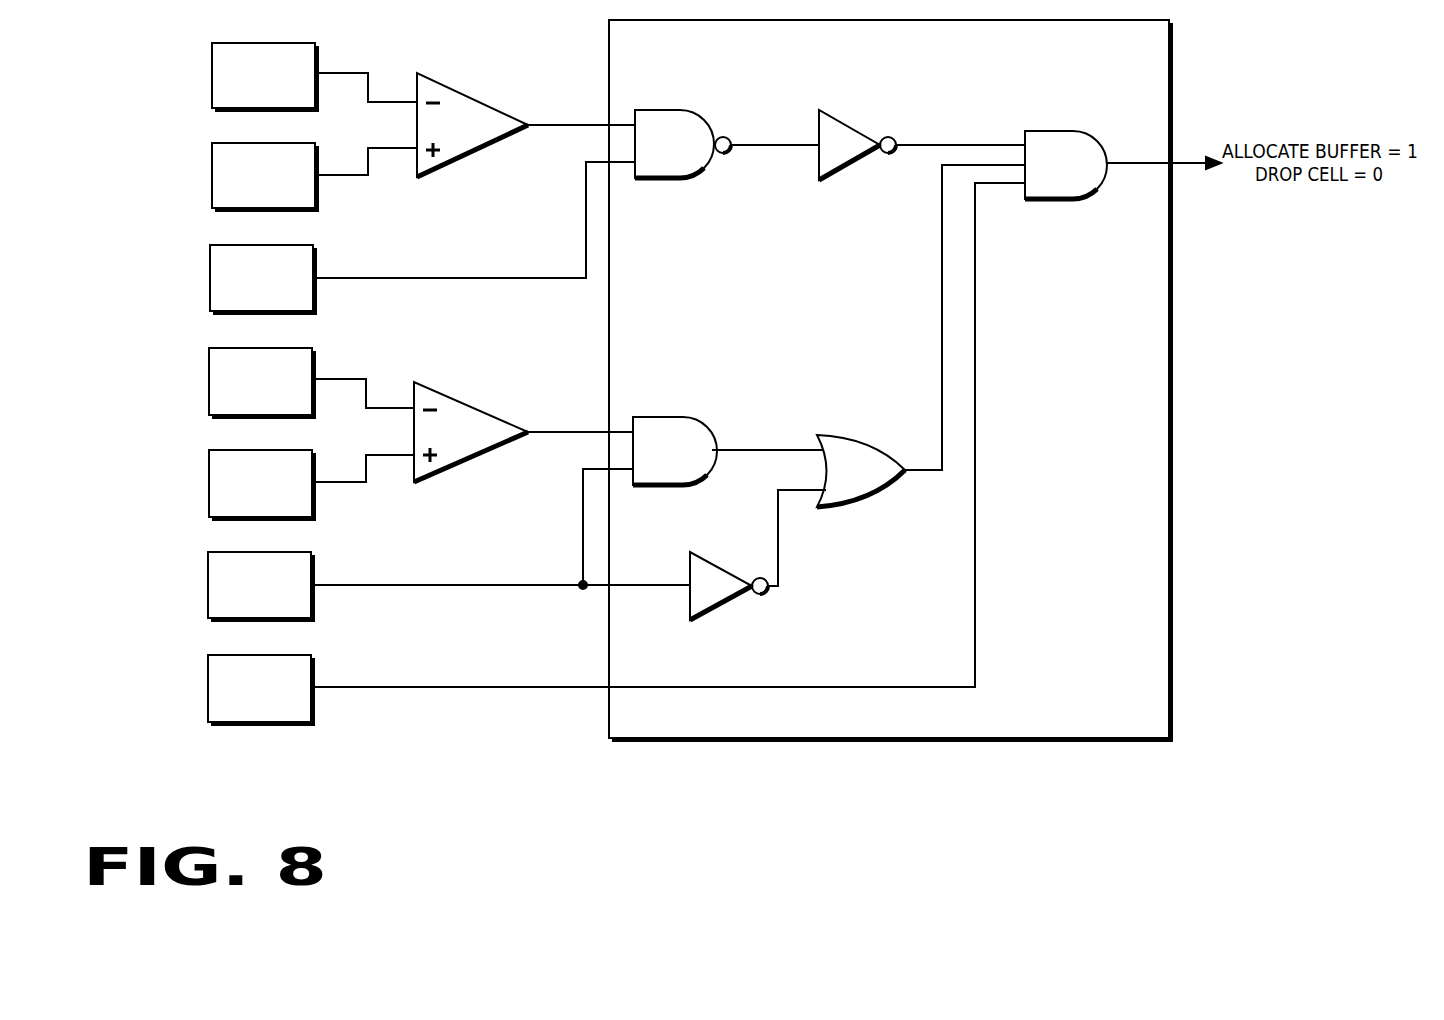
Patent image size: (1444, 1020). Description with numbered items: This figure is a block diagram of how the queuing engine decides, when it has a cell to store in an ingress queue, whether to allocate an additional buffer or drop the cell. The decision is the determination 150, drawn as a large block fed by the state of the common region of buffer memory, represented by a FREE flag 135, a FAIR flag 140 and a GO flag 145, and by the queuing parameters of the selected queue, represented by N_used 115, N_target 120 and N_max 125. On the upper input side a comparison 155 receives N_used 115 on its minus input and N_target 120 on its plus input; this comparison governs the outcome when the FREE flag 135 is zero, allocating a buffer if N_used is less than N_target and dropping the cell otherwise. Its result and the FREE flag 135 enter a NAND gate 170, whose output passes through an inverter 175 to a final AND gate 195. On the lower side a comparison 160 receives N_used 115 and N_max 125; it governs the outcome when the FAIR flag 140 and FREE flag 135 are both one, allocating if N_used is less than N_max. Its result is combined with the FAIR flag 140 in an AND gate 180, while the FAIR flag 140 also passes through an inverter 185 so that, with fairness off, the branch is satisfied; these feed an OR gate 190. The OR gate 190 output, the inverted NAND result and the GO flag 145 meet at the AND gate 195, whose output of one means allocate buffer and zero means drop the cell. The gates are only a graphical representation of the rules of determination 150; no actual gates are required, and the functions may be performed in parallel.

The queue depth field 115 is at (309, 105).
The target queue depth field 120 is at (309, 206).
The maximum queue depth field 125 is at (309, 511).
The FREE flag 135 is at (309, 306).
The FAIR flag 140 is at (308, 615).
The GO flag 145 is at (308, 718).
The determination 150 is at (1155, 728).
The comparison 155 is at (517, 78).
The comparison 160 is at (517, 386).
The NAND gate 170 is at (683, 165).
The inverter 175 is at (893, 105).
The AND gate 180 is at (684, 475).
The inverter 185 is at (719, 611).
The OR gate 190 is at (872, 492).
The AND gate 195 is at (1076, 185).